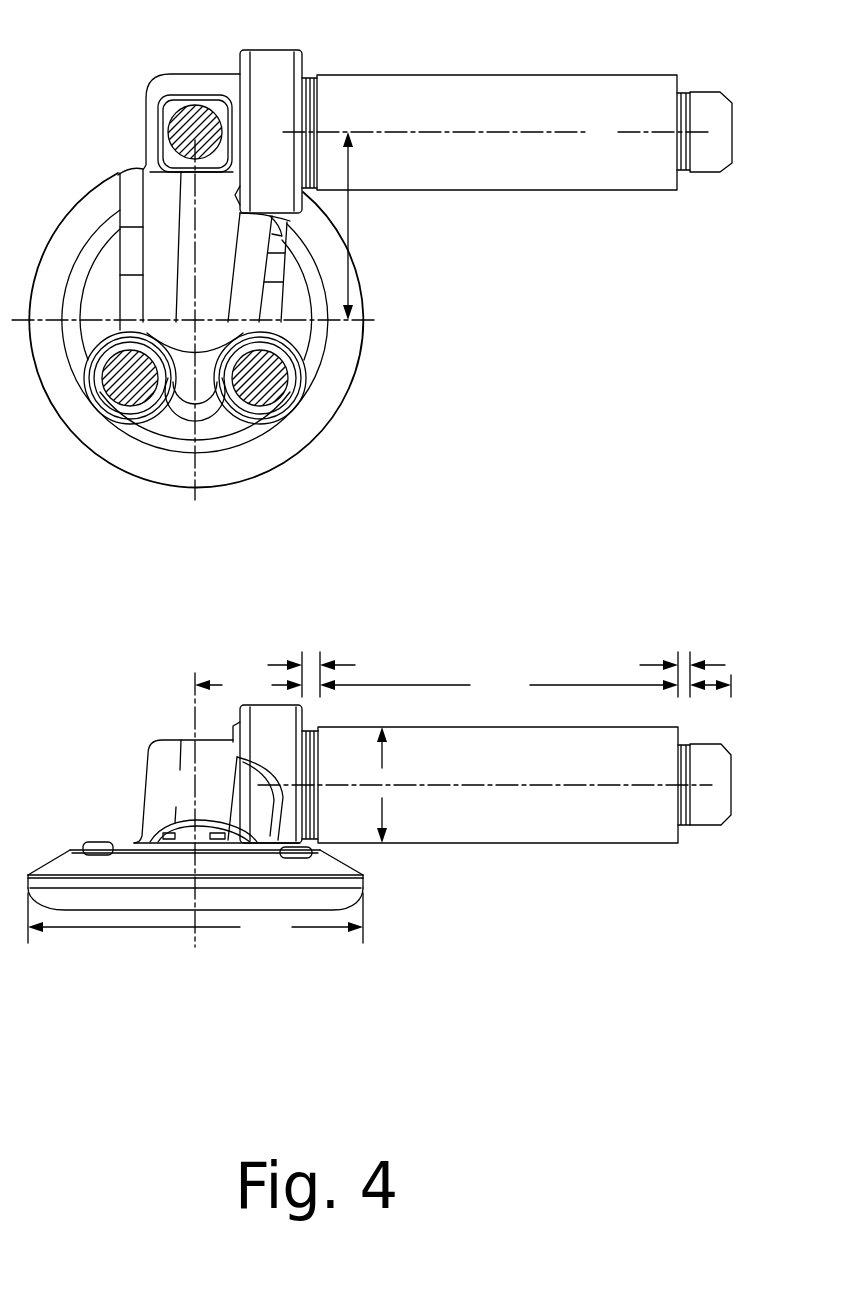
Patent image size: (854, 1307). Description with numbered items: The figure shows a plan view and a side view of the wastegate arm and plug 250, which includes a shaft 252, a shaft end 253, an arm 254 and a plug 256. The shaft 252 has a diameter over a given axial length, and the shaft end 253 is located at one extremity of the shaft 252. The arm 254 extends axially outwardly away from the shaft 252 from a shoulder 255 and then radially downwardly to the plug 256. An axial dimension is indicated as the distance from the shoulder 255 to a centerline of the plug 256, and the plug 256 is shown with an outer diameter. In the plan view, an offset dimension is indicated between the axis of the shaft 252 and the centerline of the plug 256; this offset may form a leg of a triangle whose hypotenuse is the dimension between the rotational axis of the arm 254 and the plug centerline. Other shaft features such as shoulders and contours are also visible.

The wastegate arm and plug 250 is at (124, 34).
The shaft 252 is at (528, 171).
The shaft end 253 is at (722, 172).
The arm 254 is at (218, 266).
The shoulder 255 is at (303, 50).
The plug 256 is at (107, 450).